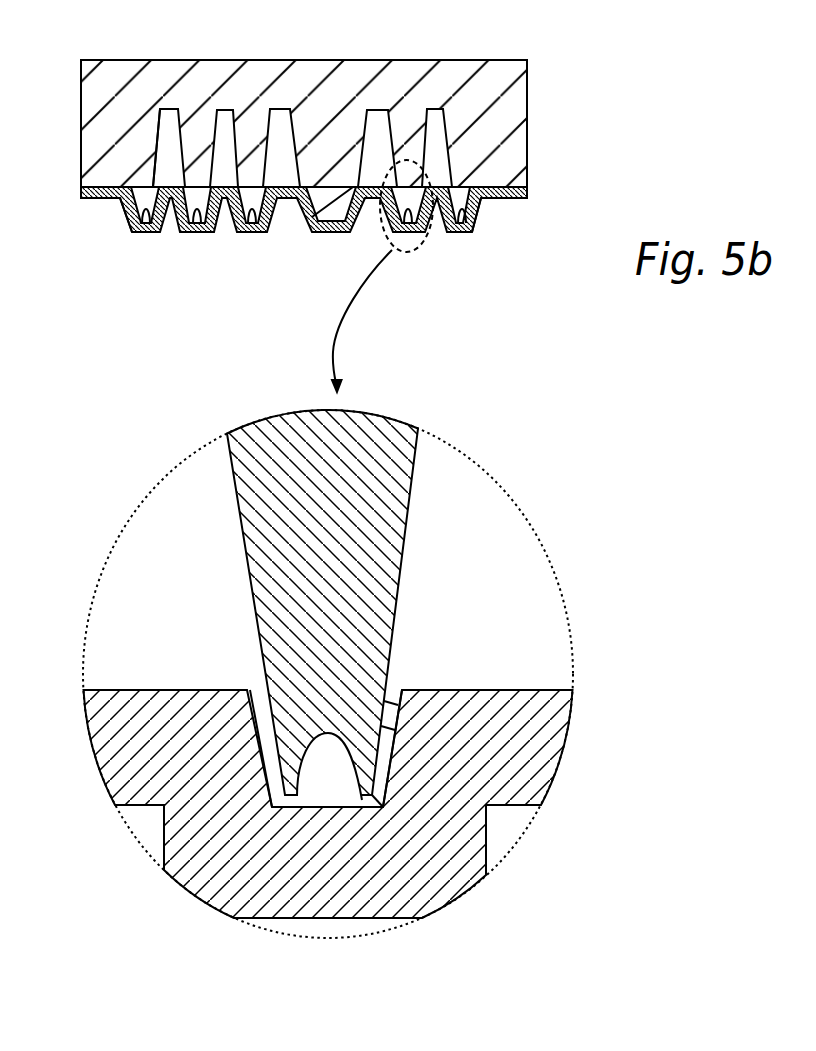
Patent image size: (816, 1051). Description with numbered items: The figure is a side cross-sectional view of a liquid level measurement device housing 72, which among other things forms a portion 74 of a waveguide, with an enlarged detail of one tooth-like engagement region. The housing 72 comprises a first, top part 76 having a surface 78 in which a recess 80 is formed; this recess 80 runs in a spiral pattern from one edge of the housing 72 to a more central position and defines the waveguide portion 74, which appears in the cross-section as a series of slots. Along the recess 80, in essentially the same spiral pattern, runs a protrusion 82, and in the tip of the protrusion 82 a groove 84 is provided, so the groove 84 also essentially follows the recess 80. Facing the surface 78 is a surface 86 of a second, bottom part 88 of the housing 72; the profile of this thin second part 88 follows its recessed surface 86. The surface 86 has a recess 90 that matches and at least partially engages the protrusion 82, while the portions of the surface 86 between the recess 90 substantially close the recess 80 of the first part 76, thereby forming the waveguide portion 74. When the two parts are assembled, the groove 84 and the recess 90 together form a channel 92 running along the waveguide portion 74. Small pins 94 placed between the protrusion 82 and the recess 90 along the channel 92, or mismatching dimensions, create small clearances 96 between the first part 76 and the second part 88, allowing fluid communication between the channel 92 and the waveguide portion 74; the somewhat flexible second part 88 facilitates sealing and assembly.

The liquid level measurement device housing 72 is at (541, 79).
The waveguide portion 74 is at (170, 135).
The first part 76 is at (527, 135).
The surface 78 is at (83, 189).
The recess 80 is at (160, 142).
The protrusion 82 is at (128, 213).
The groove 84 is at (193, 232).
The surface 86 is at (510, 200).
The second part 88 is at (488, 203).
The recess 90 is at (487, 203).
The channel 92 is at (470, 232).
The pins 94 is at (397, 720).
The clearances 96 is at (265, 743).